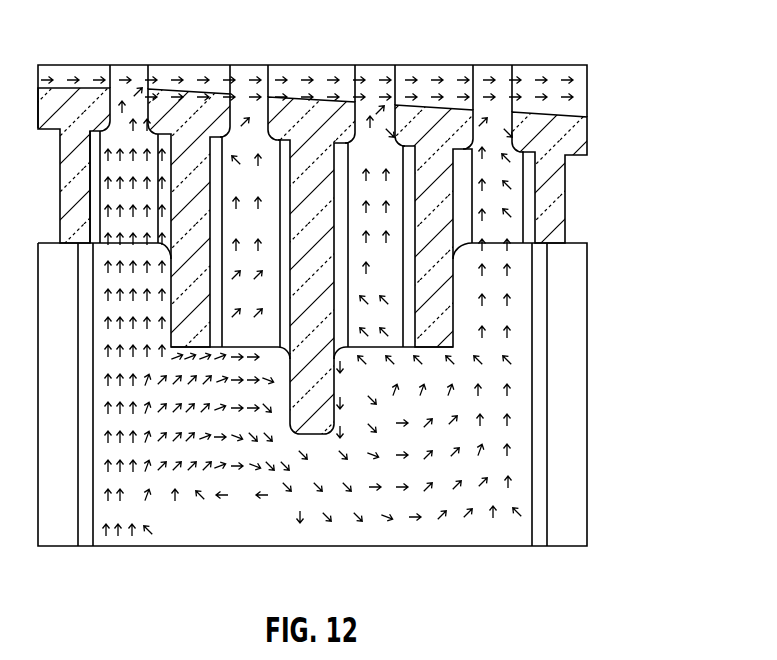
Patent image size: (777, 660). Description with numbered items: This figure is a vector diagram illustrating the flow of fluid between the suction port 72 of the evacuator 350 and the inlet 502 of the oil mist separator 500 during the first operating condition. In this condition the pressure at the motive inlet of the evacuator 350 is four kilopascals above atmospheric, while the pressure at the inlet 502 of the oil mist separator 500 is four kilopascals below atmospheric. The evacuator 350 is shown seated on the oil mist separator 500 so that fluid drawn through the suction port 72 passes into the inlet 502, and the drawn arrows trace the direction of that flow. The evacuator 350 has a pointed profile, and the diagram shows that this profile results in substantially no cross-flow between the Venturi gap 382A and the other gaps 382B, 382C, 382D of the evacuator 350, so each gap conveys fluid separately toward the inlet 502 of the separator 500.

The Venturi gap 382A is at (123, 81).
The gap 382B is at (257, 79).
The gap 382C is at (373, 79).
The gap 382D is at (499, 77).
The evacuator 350 is at (593, 134).
The suction port 72 is at (574, 231).
The oil mist separator 500 is at (587, 322).
The inlet 502 is at (490, 347).